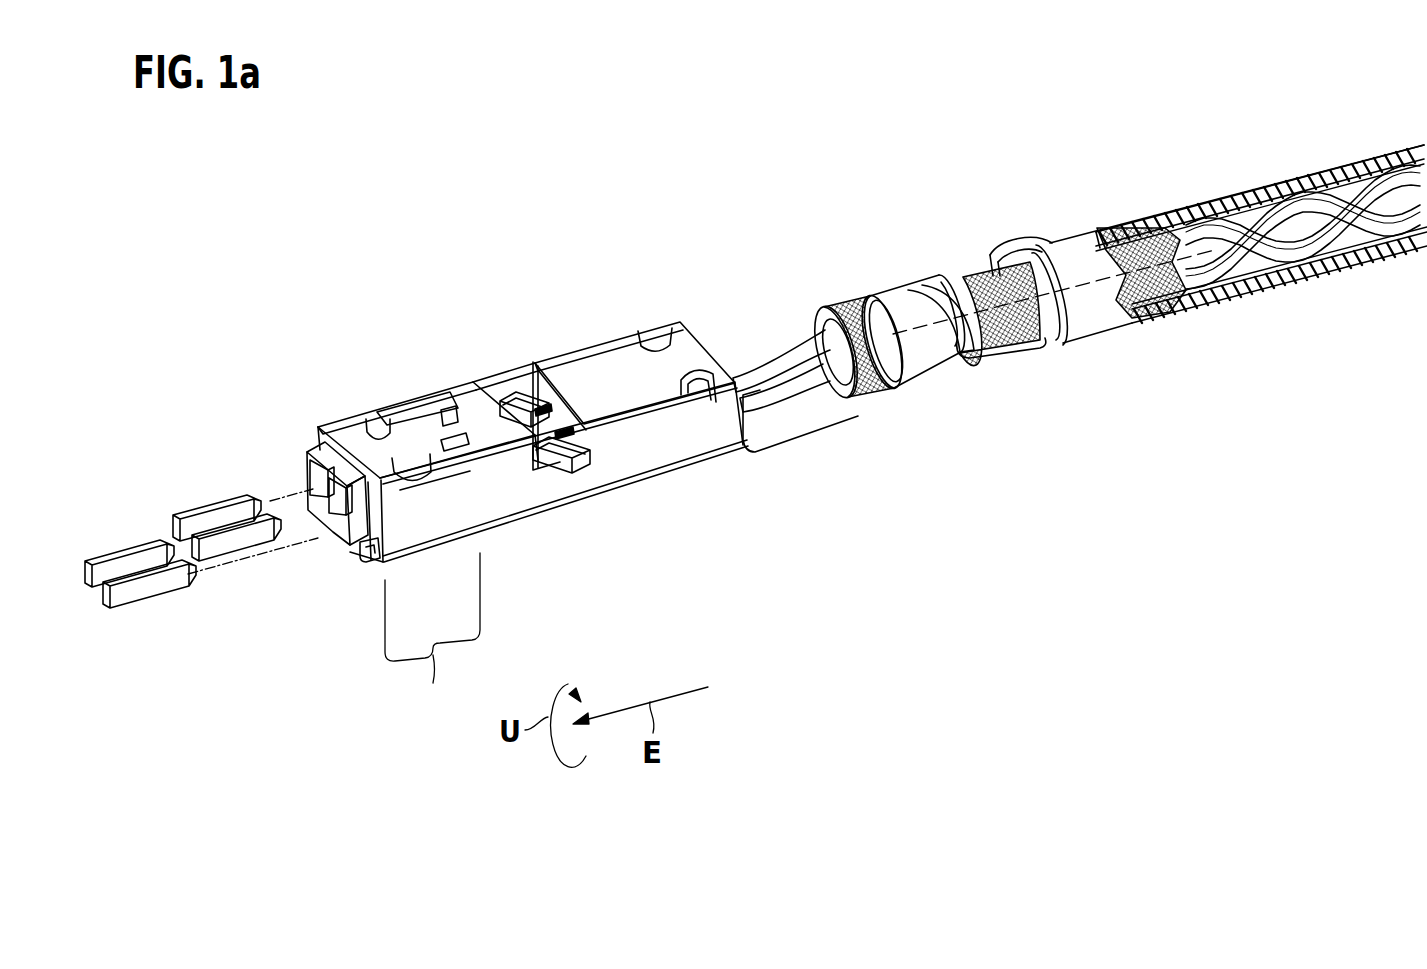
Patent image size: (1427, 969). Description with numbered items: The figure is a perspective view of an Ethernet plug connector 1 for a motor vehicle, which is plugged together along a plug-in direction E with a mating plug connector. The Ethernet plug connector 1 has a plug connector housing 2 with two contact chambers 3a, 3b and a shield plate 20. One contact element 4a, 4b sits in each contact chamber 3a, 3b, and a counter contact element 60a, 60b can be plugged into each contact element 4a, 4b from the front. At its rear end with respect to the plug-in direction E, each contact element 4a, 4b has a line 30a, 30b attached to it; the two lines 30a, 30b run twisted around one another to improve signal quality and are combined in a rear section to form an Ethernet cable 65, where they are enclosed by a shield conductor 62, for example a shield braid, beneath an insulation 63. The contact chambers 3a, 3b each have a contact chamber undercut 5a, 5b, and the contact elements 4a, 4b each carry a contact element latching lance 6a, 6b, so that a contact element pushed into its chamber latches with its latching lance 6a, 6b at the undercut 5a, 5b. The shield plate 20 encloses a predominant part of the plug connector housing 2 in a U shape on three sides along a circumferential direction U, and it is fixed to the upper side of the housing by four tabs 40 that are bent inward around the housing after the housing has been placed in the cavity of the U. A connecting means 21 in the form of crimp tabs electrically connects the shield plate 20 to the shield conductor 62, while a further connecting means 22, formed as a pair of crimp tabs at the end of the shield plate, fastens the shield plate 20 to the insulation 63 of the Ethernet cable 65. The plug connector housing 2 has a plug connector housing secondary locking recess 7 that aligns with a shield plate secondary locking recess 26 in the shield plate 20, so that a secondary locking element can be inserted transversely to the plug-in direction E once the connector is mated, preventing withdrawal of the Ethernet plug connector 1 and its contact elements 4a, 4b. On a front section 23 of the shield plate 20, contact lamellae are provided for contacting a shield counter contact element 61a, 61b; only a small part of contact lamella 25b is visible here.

The Ethernet plug connector 1 is at (761, 134).
The plug connector housing 2 is at (623, 370).
The contact chamber 3a is at (530, 410).
The contact chamber 3b is at (540, 457).
The contact element 4a is at (527, 410).
The contact element 4b is at (583, 420).
The contact chamber undercut 5a is at (455, 417).
The contact chamber undercut 5b is at (487, 462).
The contact element latching lance 6a is at (418, 402).
The contact element latching lance 6b is at (453, 503).
The plug connector housing secondary locking recess 7 is at (559, 413).
The shield plate 20 is at (460, 472).
The connecting means 21 is at (913, 313).
The further connecting means 22 is at (1027, 245).
The front section 23 is at (432, 635).
The contact lamella 25b is at (362, 562).
The shield plate secondary locking recess 26 is at (587, 445).
The line 30a is at (783, 367).
The line 30b is at (780, 397).
The tabs 40 is at (378, 425).
The counter contact element 60a is at (221, 506).
The counter contact element 60b is at (240, 540).
The shield counter contact element 61a is at (123, 553).
The shield counter contact element 61b is at (152, 585).
The shield conductor 62 is at (877, 389).
The insulation 63 is at (1380, 153).
The Ethernet cable 65 is at (1133, 197).